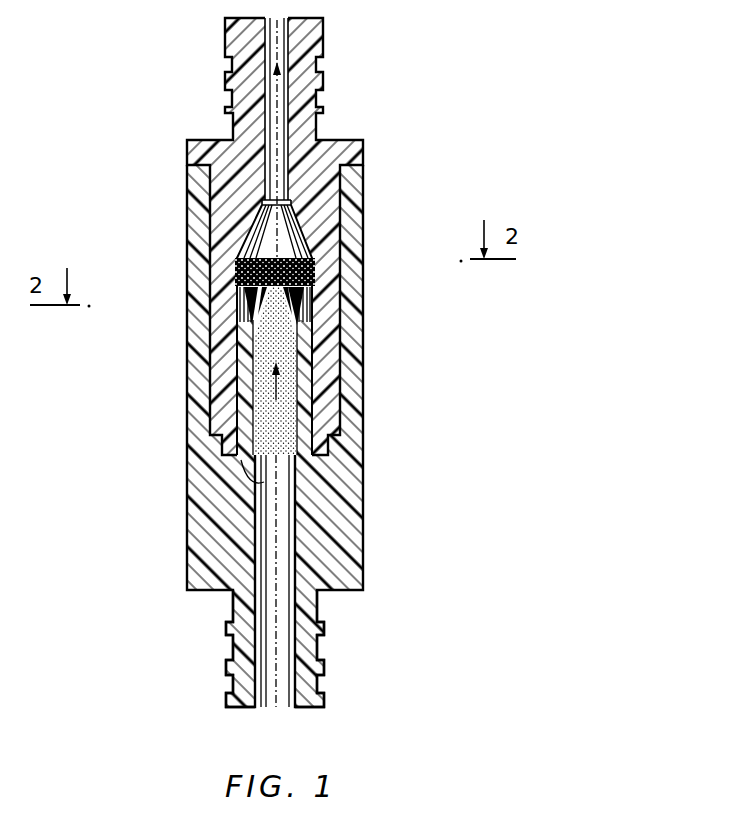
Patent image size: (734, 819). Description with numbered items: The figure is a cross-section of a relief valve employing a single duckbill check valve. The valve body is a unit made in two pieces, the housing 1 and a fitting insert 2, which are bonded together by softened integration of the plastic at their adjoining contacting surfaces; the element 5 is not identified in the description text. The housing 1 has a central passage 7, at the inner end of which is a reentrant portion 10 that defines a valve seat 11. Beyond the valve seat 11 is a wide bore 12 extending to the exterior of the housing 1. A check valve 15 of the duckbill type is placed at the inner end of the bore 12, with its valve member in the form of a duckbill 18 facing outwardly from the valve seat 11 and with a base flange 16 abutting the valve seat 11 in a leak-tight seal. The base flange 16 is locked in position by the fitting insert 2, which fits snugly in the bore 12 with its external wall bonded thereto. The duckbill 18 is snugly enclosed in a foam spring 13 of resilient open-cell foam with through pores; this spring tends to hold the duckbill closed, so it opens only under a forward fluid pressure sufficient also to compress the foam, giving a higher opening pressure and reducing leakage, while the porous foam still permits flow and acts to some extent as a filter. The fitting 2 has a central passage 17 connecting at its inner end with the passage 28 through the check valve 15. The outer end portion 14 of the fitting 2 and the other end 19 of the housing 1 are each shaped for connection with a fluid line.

The housing 1 is at (370, 460).
The fitting insert 2 is at (330, 347).
The outer sleeve 5 is at (197, 233).
The central passage 7 is at (283, 546).
The reentrant portion 10 is at (291, 588).
The valve seat 11 is at (268, 478).
The wide bore 12 is at (337, 315).
The foam spring 13 is at (318, 270).
The outer end portion 14 is at (318, 41).
The check valve 15 is at (303, 395).
The base flange 16 is at (228, 449).
The central passage 17 is at (273, 42).
The duckbill 18 is at (252, 324).
The other end 19 is at (320, 686).
The passage 28 is at (288, 434).